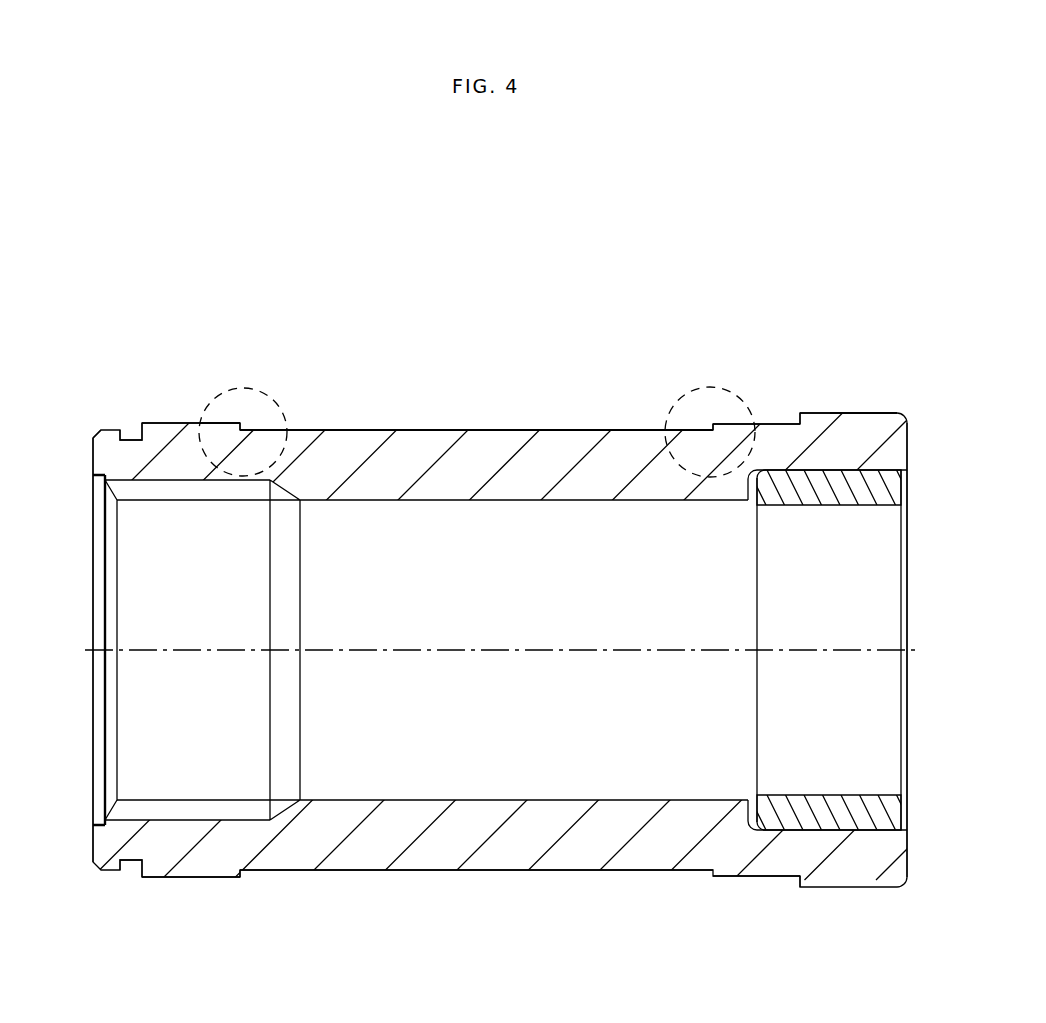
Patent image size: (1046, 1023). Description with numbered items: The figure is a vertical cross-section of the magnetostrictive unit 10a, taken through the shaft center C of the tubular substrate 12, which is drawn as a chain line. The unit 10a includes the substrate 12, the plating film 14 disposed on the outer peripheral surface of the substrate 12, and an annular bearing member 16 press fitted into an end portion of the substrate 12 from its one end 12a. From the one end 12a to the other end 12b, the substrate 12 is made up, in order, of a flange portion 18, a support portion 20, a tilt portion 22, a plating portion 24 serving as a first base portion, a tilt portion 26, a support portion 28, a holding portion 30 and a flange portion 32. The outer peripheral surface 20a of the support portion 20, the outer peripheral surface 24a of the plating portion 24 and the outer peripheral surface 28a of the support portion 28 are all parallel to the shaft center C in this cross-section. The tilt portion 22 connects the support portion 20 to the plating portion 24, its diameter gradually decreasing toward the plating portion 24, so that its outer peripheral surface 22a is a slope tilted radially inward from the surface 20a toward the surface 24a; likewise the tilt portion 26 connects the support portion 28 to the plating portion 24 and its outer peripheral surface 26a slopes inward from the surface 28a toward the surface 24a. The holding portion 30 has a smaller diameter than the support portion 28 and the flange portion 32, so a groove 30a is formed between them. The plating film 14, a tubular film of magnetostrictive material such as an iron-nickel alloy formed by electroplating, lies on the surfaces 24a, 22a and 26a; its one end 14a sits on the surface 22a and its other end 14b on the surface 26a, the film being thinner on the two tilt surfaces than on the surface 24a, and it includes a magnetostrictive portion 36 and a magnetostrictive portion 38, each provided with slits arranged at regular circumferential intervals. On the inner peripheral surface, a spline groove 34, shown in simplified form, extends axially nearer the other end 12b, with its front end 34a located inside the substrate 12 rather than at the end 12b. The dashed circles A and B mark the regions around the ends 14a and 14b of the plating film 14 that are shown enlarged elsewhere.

The magnetostrictive unit 10a is at (360, 348).
The tubular substrate 12 is at (822, 401).
The one end 12a is at (909, 438).
The other end 12b is at (94, 462).
The plating film 14 is at (449, 424).
The one end of the plating film 14a is at (712, 424).
The other end of the plating film 14b is at (243, 424).
The bearing member 16 is at (905, 815).
The flange portion 18 is at (853, 430).
The support portion 20 is at (782, 424).
The outer peripheral surface of the support portion 20a is at (758, 888).
The tilt portion 22 is at (712, 424).
The outer peripheral surface of the tilt portion 22a is at (712, 877).
The plating portion 24 is at (508, 430).
The outer peripheral surface of the plating portion 24a is at (535, 876).
The tilt portion 26 is at (242, 424).
The outer peripheral surface of the tilt portion 26a is at (245, 878).
The support portion 28 is at (168, 433).
The outer peripheral surface of the support portion 28a is at (197, 878).
The holding portion 30 is at (133, 447).
The groove 30a is at (131, 865).
The flange portion 32 is at (106, 440).
The spline groove 34 is at (230, 490).
The front end of the spline groove 34a is at (107, 632).
The magnetostrictive portion 36 is at (571, 428).
The magnetostrictive portion 38 is at (352, 428).
The enlarged region A is at (731, 375).
The enlarged region B is at (228, 390).
The shaft center C is at (847, 650).